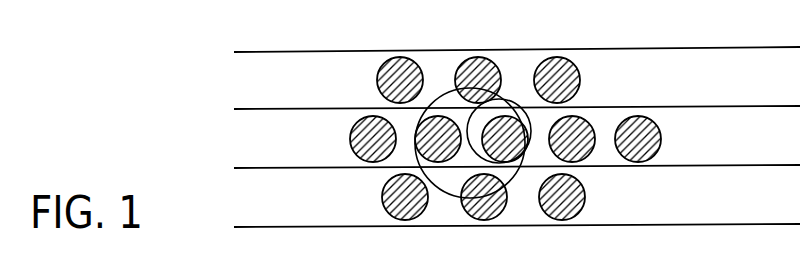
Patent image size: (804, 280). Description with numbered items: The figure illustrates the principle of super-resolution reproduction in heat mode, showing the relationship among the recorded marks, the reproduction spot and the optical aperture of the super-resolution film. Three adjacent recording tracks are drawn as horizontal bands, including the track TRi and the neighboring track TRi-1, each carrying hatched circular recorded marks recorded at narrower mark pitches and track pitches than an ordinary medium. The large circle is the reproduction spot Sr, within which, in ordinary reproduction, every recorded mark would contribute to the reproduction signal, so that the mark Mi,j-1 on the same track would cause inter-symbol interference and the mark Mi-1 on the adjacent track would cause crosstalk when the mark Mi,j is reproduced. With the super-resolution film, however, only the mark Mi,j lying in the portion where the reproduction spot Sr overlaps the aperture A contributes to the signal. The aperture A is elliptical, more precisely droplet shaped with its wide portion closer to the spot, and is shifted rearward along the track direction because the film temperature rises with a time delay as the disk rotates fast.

The recording track TRi is at (517, 128).
The recording track TRi-1 is at (517, 189).
The reproduction spot Sr is at (442, 88).
The recorded mark Mi,j is at (513, 112).
The recorded mark Mi,j-1 is at (443, 163).
The recorded mark Mi-1 is at (487, 218).
The aperture of the super-resolution film A is at (568, 167).